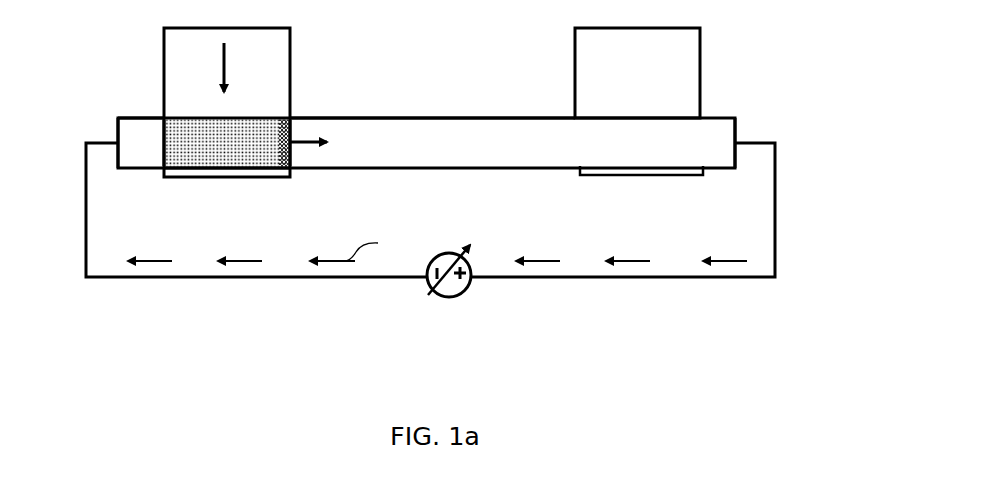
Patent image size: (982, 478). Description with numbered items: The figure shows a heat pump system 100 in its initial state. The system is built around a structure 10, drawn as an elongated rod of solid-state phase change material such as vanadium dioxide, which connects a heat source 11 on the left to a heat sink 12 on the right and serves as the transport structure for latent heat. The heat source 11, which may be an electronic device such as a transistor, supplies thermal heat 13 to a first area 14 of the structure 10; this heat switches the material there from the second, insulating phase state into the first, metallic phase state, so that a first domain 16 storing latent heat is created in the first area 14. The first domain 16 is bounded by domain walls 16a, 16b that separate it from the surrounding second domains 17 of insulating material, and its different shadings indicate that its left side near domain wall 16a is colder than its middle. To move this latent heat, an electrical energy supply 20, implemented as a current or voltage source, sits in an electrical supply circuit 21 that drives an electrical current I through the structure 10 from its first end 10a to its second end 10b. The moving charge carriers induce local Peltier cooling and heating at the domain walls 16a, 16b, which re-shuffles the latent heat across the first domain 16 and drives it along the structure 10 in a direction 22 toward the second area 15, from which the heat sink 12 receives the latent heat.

The heat pump system 100 is at (430, 235).
The structure 10 is at (488, 163).
The first end 10a is at (118, 125).
The second end 10b is at (735, 131).
The heat source 11 is at (290, 73).
The heat sink 12 is at (682, 72).
The thermal heat 13 is at (229, 64).
The first area 14 is at (227, 177).
The second area 15 is at (642, 175).
The first domain 16 is at (247, 131).
The domain wall 16a is at (162, 149).
The domain wall 16b is at (290, 160).
The second domains 17 is at (138, 138).
The electrical energy supply 20 is at (471, 288).
The electrical supply circuit 21 is at (193, 278).
The direction 22 is at (314, 139).